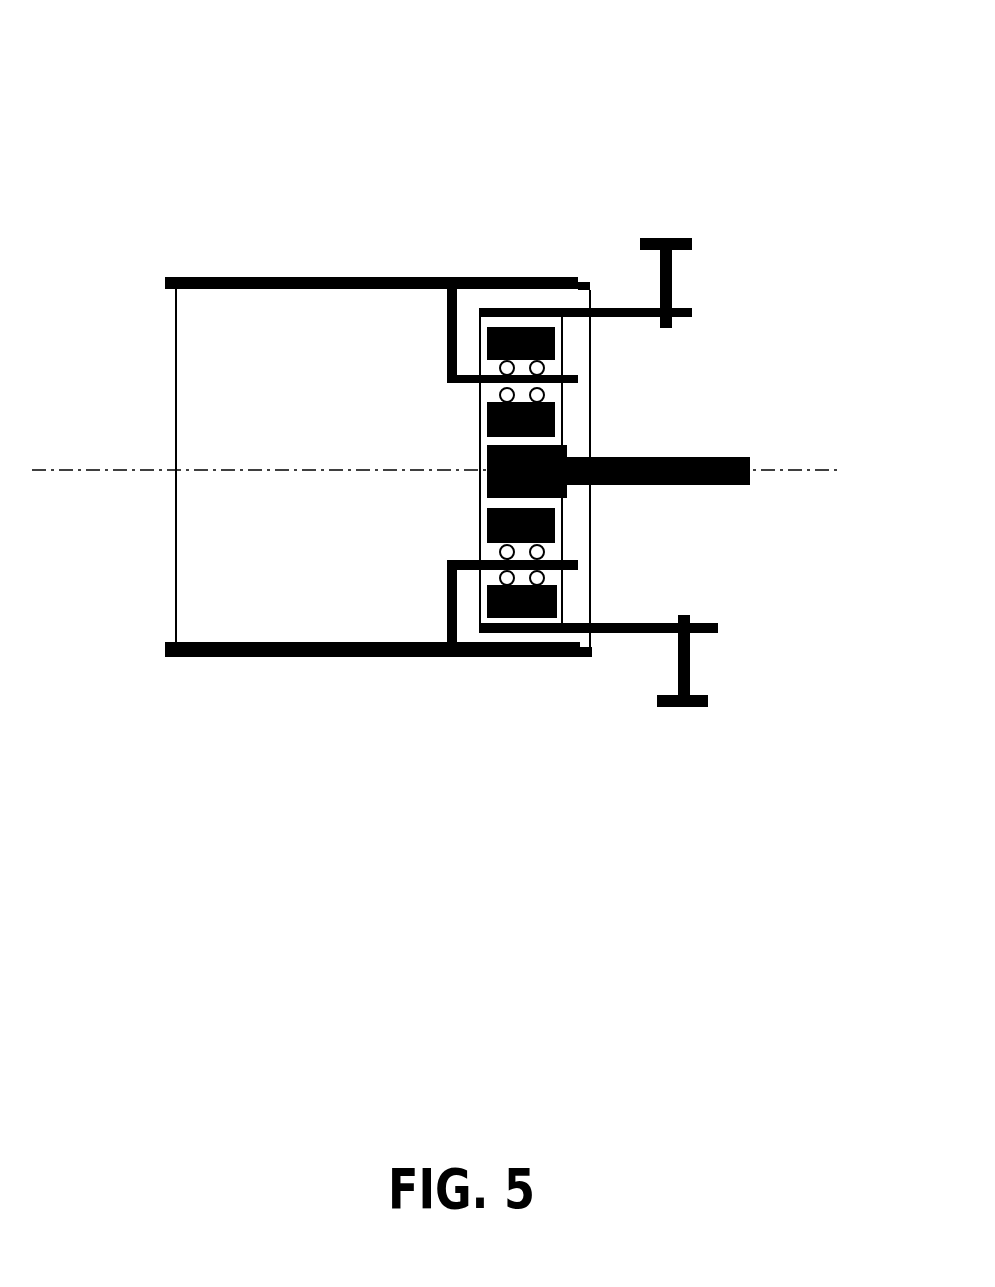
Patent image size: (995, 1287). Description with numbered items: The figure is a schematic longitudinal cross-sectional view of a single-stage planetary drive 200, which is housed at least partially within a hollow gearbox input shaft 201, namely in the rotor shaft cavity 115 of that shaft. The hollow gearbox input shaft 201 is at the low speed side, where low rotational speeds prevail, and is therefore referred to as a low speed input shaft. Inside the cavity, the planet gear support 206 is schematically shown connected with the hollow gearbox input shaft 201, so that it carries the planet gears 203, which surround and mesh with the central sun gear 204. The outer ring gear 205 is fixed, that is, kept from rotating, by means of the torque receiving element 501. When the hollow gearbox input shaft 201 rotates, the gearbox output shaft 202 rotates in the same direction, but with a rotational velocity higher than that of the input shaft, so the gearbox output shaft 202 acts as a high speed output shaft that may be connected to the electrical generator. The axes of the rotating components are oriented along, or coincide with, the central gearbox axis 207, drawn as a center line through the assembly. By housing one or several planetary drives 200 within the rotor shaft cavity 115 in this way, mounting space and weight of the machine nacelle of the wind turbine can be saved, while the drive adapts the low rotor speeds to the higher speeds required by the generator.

The planetary drive 200 is at (722, 34).
The hollow gearbox input shaft 201 is at (190, 278).
The rotor shaft cavity 115 is at (338, 322).
The gearbox output shaft 202 is at (655, 455).
The planet gears 203 is at (557, 533).
The central sun gear 204 is at (485, 482).
The outer ring gear 205 is at (478, 605).
The planet gear support 206 is at (447, 377).
The central gearbox axis 207 is at (135, 470).
The torque receiving element 501 is at (673, 265).